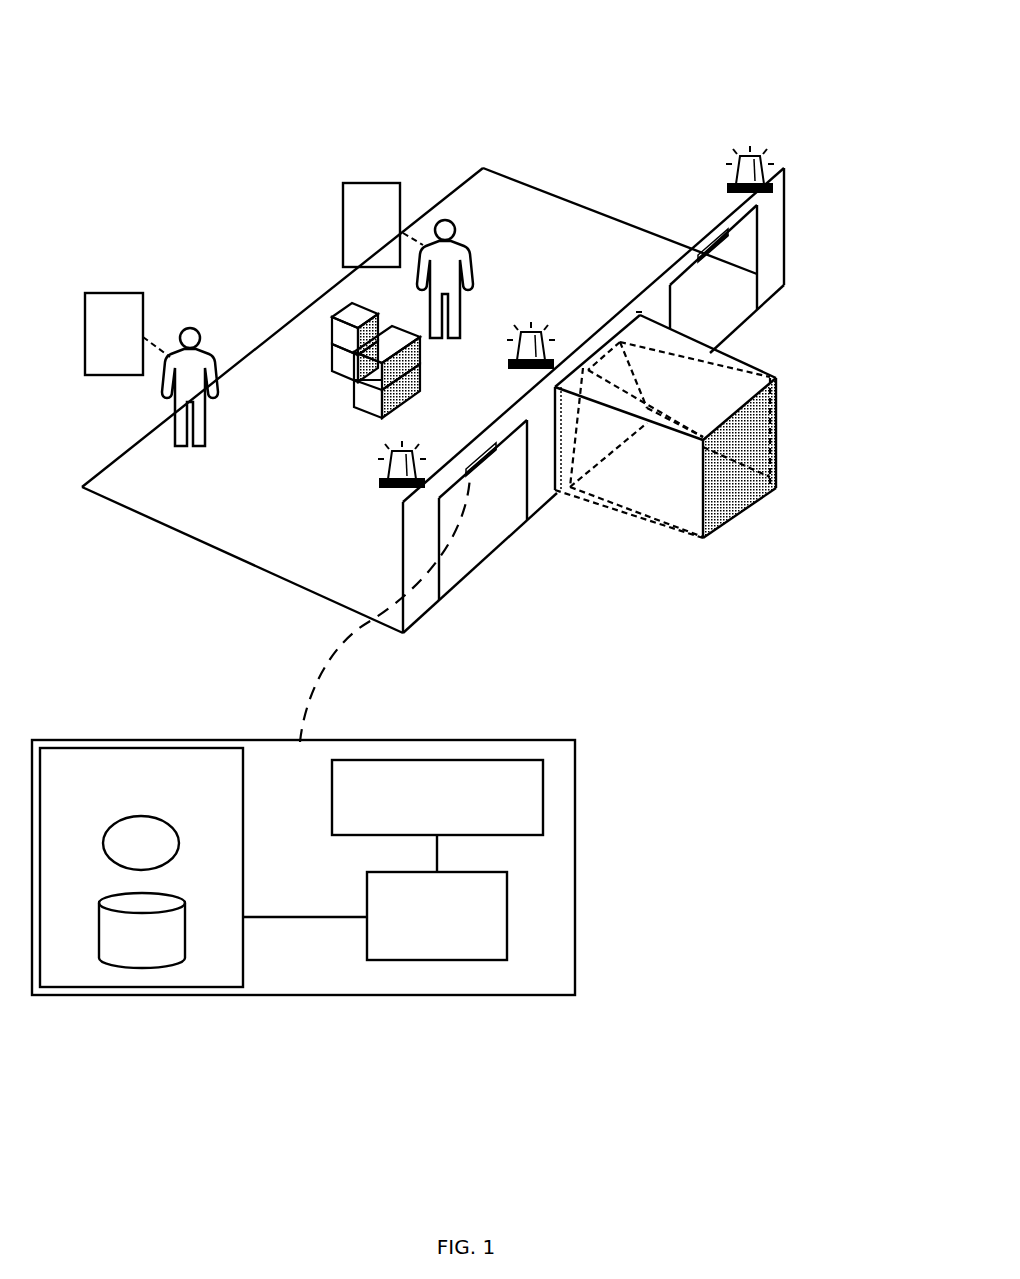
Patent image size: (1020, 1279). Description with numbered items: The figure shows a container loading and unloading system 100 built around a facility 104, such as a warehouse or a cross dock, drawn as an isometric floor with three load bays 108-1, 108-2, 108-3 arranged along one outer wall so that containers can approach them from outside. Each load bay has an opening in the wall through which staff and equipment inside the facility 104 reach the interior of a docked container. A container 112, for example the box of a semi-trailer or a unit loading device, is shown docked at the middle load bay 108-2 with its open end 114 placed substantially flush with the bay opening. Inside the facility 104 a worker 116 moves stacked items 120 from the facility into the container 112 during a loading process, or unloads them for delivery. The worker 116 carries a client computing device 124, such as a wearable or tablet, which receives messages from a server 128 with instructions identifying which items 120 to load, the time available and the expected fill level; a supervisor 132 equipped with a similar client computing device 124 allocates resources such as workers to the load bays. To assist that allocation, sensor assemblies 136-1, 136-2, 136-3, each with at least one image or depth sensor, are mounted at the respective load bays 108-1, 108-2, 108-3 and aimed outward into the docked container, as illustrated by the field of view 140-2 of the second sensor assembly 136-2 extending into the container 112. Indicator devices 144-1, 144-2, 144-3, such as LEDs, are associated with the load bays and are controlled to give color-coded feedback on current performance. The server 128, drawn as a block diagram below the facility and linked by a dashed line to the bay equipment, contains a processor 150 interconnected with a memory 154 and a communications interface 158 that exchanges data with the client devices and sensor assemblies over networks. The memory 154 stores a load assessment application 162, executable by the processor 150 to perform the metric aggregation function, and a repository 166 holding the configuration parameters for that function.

The container loading and unloading system 100 is at (678, 98).
The facility 104 is at (538, 178).
The load bay 108-1 is at (758, 248).
The load bay 108-2 is at (600, 350).
The load bay 108-3 is at (460, 583).
The container 112 is at (792, 413).
The open end 114 is at (553, 413).
The worker 116 is at (445, 218).
The items 120 is at (336, 316).
The client computing device 124 is at (96, 345).
The server 128 is at (290, 1008).
The supervisor 132 is at (189, 326).
The sensor assembly 136-1 is at (730, 258).
The sensor assembly 136-2 is at (612, 340).
The sensor assembly 136-3 is at (486, 466).
The field of view 140-2 is at (593, 468).
The indicator device 144-1 is at (750, 146).
The indicator device 144-2 is at (532, 324).
The indicator device 144-3 is at (390, 487).
The processor 150 is at (419, 916).
The memory 154 is at (123, 783).
The communications interface 158 is at (419, 798).
The load assessment application 162 is at (122, 856).
The repository 166 is at (123, 946).